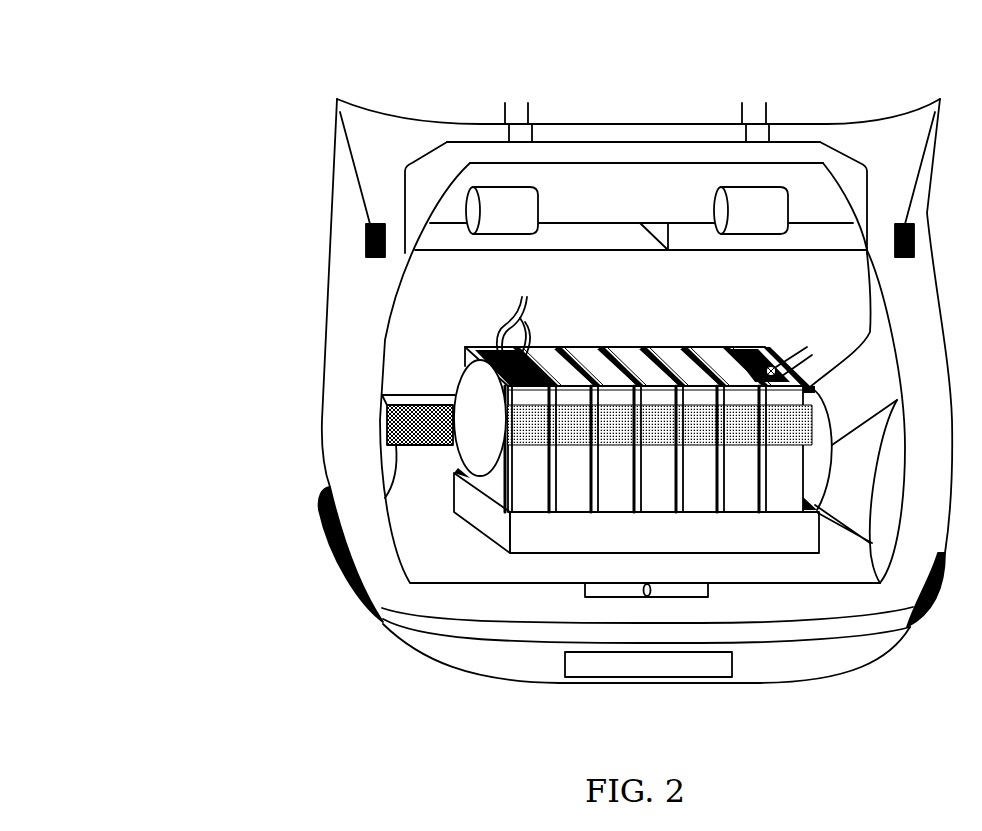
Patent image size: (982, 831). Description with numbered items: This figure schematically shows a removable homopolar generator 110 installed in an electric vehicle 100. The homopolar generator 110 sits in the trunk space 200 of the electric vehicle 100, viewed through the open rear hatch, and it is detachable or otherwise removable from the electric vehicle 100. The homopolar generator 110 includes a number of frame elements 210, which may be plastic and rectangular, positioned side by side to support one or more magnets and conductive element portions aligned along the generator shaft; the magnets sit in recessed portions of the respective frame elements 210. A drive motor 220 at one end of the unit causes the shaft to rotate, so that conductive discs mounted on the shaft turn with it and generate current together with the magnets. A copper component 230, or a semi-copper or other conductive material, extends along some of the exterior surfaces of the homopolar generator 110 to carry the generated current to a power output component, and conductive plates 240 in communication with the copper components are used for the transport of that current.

The electric vehicle 100 is at (160, 65).
The trunk space 200 is at (307, 340).
The homopolar generator 110 is at (462, 344).
The frame elements 210 is at (658, 449).
The drive motor 220 is at (444, 418).
The copper component 230 is at (777, 365).
The conductive plates 240 is at (567, 346).